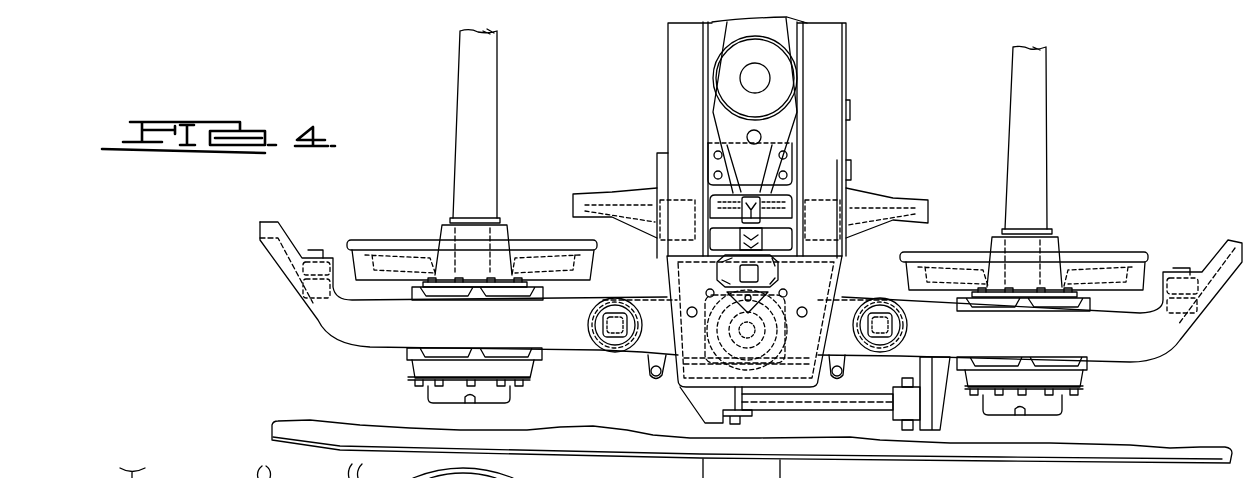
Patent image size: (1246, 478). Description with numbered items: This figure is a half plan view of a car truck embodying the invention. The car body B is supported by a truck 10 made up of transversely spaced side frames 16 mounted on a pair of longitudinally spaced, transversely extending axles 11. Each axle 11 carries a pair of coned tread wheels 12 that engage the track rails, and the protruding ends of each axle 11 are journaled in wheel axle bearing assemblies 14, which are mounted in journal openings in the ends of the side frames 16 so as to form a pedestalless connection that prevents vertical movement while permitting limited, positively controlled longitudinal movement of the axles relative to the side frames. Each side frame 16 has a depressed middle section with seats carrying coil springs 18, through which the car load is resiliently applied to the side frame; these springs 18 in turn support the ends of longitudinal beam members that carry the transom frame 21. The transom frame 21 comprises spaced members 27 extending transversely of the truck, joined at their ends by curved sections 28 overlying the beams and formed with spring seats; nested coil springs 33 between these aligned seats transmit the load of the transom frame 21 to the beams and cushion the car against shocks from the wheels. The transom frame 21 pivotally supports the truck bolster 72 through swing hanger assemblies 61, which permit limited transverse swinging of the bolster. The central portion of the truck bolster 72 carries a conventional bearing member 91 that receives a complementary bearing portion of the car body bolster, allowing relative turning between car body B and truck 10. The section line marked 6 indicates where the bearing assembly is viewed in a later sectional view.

The truck 10 is at (721, 292).
The axle 11 is at (482, 105).
The coned tread wheel 12 is at (366, 246).
The wheel axle bearing assembly 14 is at (412, 376).
The side frame 16 is at (337, 325).
The coil spring 18 is at (639, 290).
The transom frame 21 is at (750, 165).
The spaced member 27 is at (680, 138).
The curved section 28 is at (690, 373).
The nested coil spring 33 is at (778, 416).
The swing hanger assembly 61 is at (822, 262).
The truck bolster 72 is at (718, 33).
The bearing member 91 is at (723, 77).
The section line 6 is at (430, 320).
The car body B is at (1180, 448).